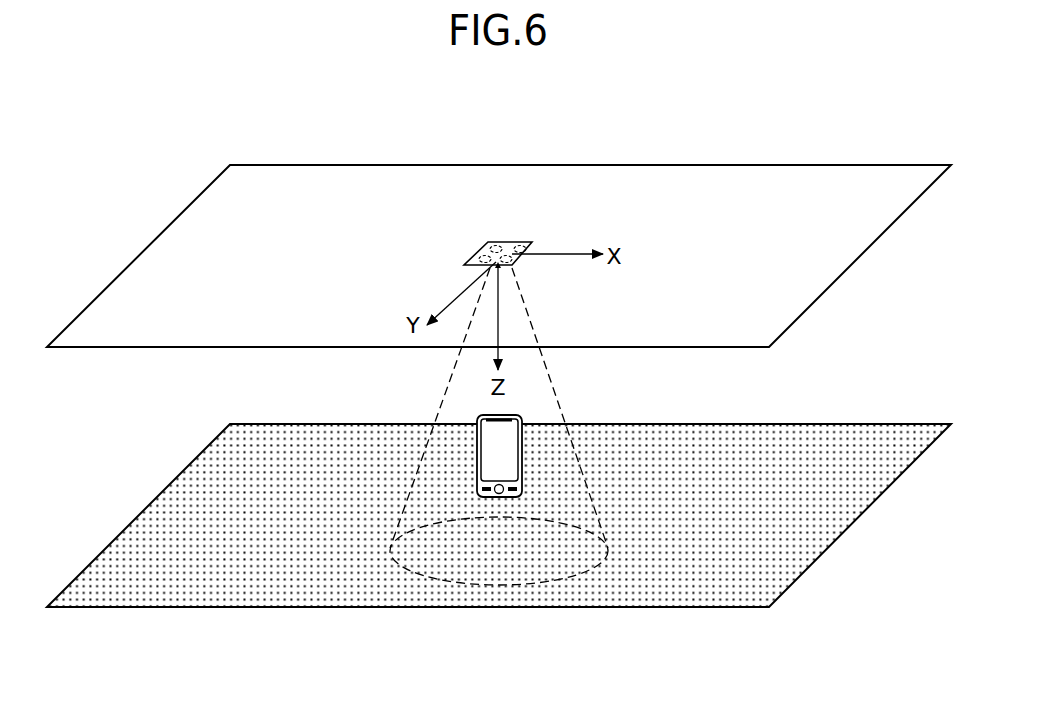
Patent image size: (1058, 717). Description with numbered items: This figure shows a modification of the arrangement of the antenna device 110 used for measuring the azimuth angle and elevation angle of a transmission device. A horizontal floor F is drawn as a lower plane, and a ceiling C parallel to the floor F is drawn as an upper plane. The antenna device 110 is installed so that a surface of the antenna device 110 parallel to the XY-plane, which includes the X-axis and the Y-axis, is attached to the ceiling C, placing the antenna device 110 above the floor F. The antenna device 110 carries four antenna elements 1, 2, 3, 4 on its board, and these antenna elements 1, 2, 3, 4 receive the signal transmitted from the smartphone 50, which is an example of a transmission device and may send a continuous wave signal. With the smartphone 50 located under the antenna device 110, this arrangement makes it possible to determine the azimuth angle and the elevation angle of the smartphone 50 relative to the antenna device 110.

The antenna element 1 is at (483, 242).
The antenna element 2 is at (528, 242).
The antenna element 3 is at (466, 260).
The antenna element 4 is at (520, 267).
The antenna device 110 is at (489, 248).
The smartphone 50 is at (522, 458).
The ceiling C is at (725, 195).
The floor F is at (715, 586).